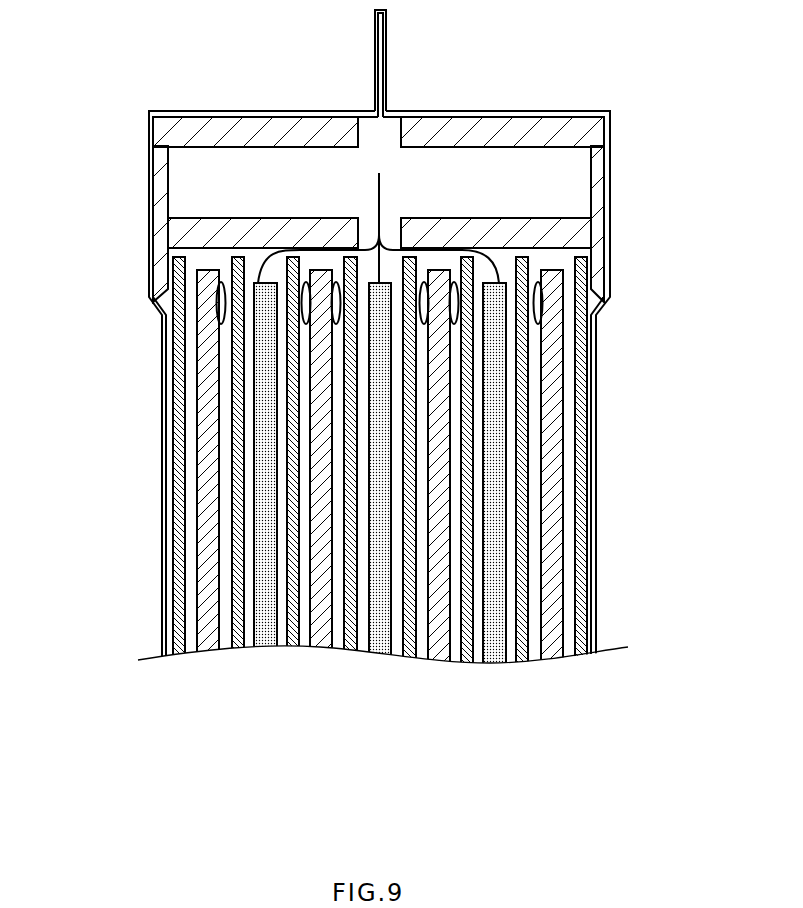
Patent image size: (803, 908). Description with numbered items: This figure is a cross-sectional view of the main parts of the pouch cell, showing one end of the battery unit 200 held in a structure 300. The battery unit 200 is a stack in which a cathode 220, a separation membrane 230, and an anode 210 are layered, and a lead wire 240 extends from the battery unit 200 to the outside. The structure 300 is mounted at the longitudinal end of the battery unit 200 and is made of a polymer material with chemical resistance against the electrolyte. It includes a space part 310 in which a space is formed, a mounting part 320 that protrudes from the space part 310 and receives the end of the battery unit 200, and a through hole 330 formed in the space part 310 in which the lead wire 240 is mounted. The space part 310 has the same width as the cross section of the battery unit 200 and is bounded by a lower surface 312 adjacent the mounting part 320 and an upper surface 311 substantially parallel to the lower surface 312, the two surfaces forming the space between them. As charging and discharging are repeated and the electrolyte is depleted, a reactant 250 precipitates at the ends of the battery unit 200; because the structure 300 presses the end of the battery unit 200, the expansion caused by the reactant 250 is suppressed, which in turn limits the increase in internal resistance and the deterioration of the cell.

The battery unit 200 is at (421, 498).
The anode 210 is at (207, 648).
The cathode 220 is at (268, 648).
The separation membrane 230 is at (348, 648).
The lead wire 240 is at (375, 31).
The reactant 250 is at (538, 306).
The structure 300 is at (366, 360).
The space part 310 is at (232, 177).
The upper surface 311 is at (513, 130).
The lower surface 312 is at (556, 245).
The mounting part 320 is at (597, 283).
The through hole 330 is at (395, 217).